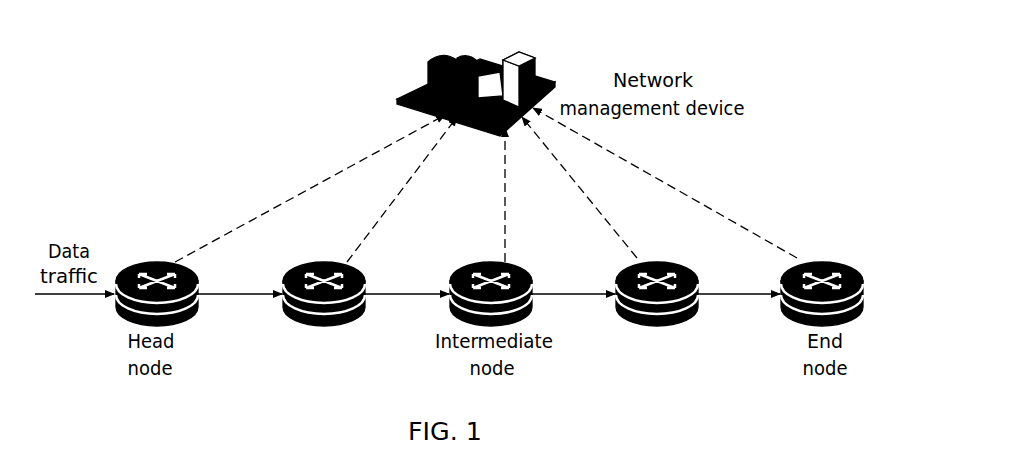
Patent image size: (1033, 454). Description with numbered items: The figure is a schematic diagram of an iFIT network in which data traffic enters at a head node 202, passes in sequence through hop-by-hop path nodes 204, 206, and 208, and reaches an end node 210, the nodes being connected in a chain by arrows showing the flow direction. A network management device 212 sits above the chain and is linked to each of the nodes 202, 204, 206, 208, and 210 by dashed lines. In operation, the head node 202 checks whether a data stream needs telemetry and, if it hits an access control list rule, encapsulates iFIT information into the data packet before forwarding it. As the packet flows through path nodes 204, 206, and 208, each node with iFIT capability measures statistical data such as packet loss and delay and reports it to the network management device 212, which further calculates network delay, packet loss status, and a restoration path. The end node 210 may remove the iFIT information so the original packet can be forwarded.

The head node 202 is at (162, 262).
The hop-by-hop path node 204 is at (325, 260).
The hop-by-hop path node 206 is at (492, 258).
The hop-by-hop path node 208 is at (662, 258).
The end node 210 is at (820, 258).
The network management device 212 is at (495, 58).